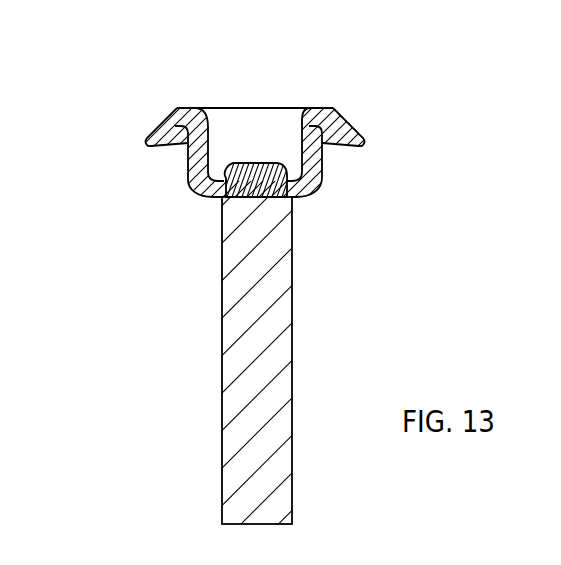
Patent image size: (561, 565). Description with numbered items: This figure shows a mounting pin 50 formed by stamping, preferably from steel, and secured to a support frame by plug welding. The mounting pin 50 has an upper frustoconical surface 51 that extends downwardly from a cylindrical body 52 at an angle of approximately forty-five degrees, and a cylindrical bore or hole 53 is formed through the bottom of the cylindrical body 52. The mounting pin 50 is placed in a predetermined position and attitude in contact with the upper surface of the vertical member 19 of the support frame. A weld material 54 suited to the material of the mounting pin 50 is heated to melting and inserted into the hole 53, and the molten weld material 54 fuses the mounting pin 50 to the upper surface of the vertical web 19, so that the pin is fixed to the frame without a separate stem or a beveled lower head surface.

The vertical member 19 is at (222, 421).
The mounting pin 50 is at (237, 218).
The upper frustoconical surface 51 is at (357, 128).
The cylindrical body 52 is at (188, 161).
The hole 53 is at (282, 157).
The weld material 54 is at (258, 163).